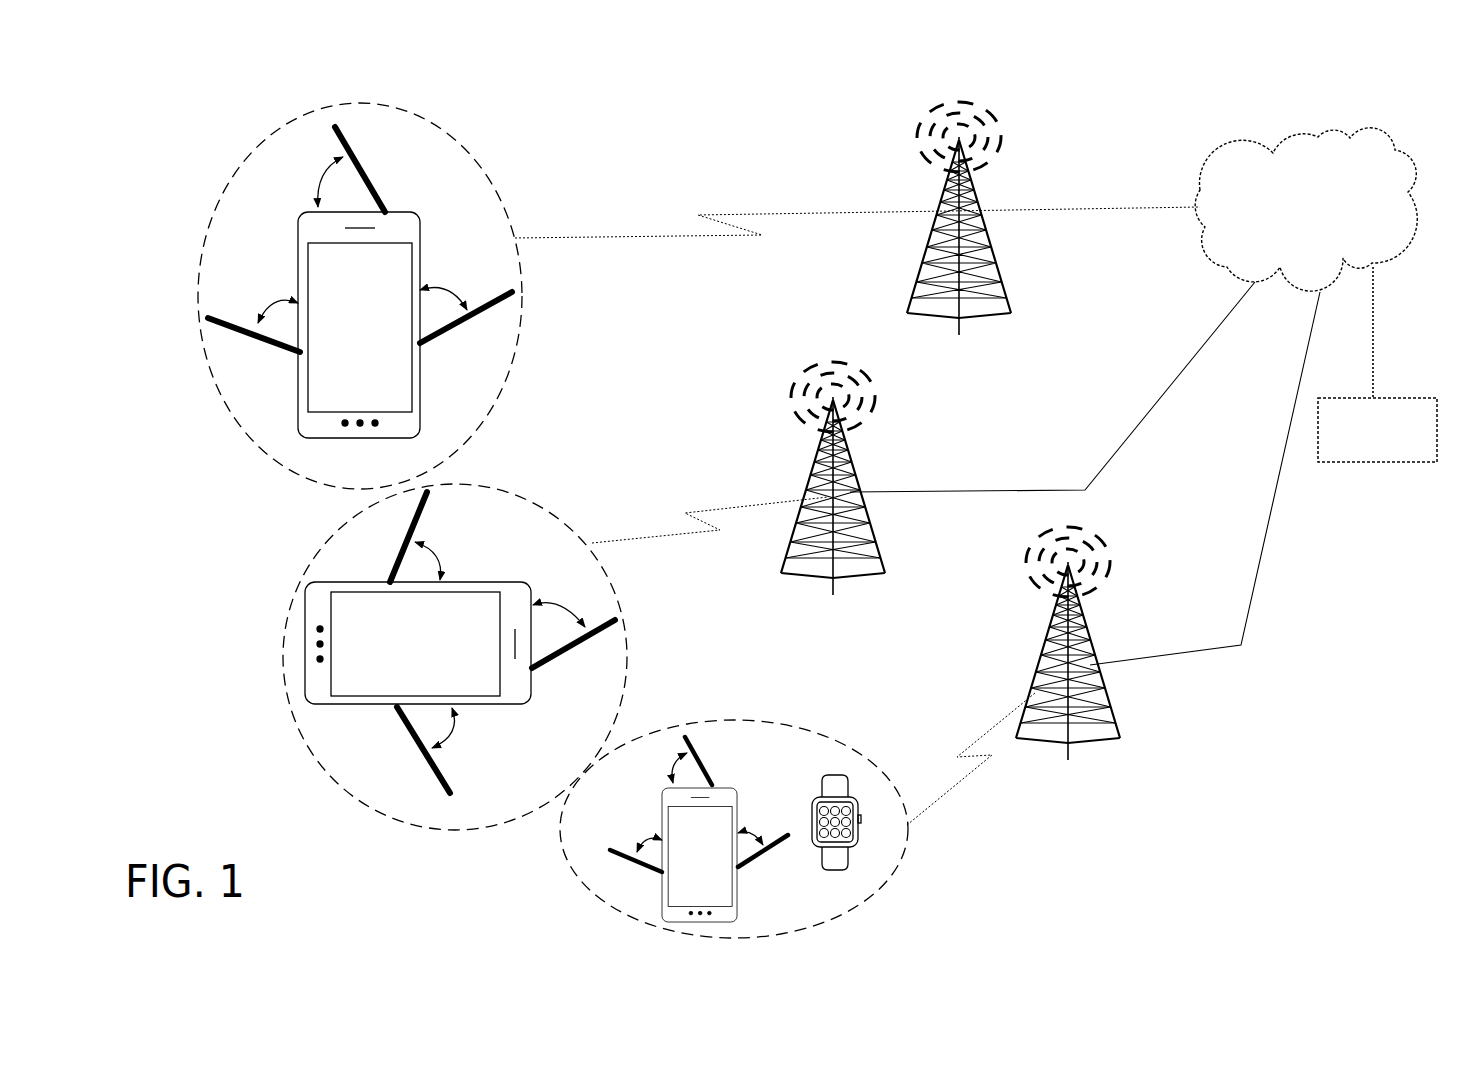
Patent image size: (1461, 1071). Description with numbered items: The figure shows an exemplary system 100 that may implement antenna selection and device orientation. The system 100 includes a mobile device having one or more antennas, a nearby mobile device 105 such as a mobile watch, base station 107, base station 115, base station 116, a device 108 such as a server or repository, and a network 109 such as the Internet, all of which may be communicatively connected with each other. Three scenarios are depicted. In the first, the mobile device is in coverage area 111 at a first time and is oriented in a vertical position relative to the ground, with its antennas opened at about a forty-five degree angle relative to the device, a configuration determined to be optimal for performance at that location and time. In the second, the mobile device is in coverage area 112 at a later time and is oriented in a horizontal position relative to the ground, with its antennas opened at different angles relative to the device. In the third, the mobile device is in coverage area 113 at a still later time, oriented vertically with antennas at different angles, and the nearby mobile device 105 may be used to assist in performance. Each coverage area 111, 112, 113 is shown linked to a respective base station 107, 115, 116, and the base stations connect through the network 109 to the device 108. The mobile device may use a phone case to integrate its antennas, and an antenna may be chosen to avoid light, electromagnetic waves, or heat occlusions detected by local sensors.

The system 100 is at (185, 75).
The mobile device 105 is at (888, 869).
The base station 107 is at (990, 262).
The device 108 is at (1359, 444).
The network 109 is at (1290, 221).
The coverage area 111 is at (467, 150).
The coverage area 112 is at (608, 568).
The coverage area 113 is at (903, 850).
The base station 115 is at (860, 515).
The base station 116 is at (1097, 693).